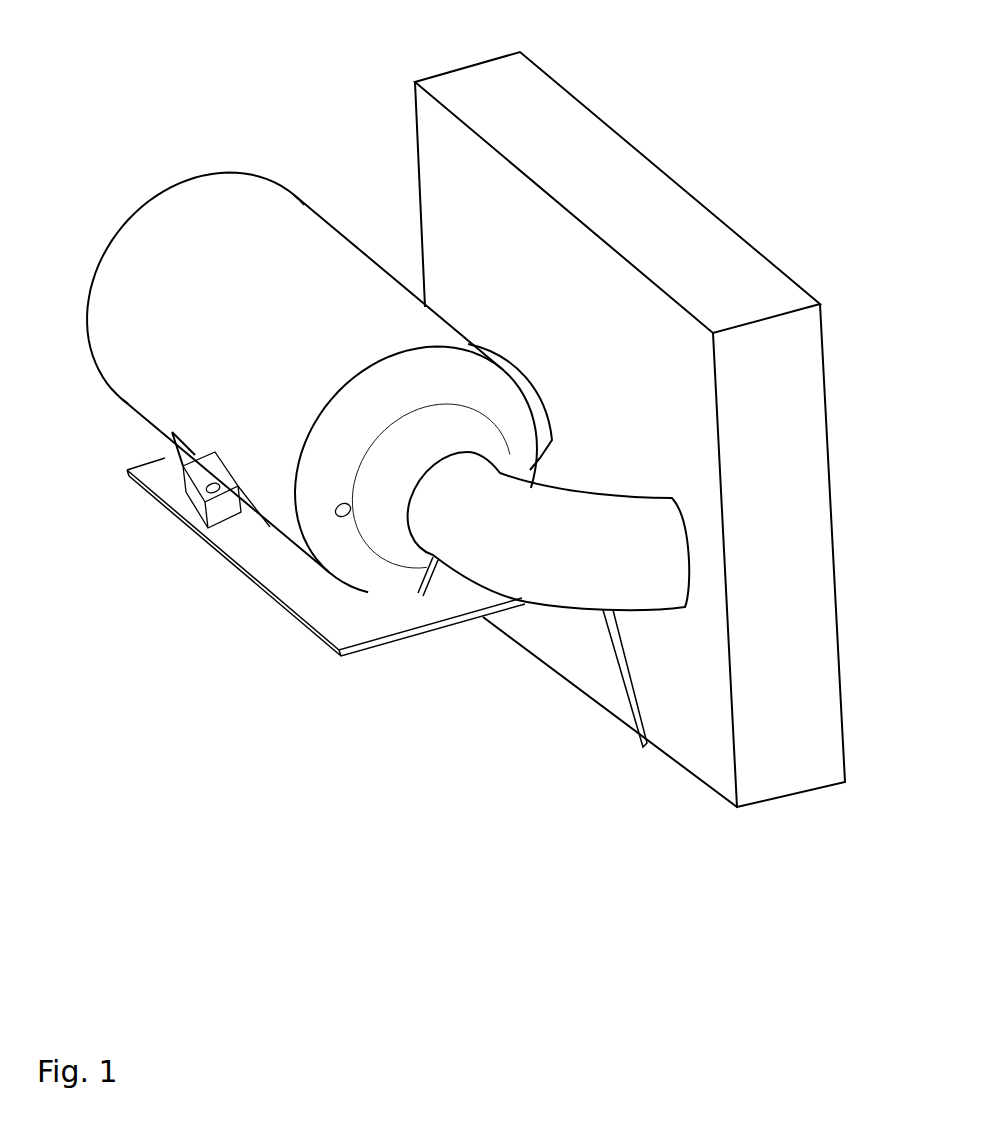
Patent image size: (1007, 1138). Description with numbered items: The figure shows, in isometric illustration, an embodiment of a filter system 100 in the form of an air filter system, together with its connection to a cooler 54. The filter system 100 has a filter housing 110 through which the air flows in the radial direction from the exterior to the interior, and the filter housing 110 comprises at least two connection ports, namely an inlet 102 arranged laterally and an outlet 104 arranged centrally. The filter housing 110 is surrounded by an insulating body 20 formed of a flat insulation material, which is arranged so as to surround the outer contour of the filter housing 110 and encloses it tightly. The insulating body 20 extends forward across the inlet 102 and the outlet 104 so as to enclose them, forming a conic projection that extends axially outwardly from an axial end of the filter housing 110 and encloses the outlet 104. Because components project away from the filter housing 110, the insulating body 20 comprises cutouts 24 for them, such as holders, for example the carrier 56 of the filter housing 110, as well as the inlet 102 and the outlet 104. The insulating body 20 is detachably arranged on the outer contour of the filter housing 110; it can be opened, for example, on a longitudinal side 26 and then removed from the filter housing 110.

The filter system 100 is at (203, 125).
The insulating body 20 is at (125, 237).
The cooler 54 is at (652, 163).
The filter housing 110 is at (420, 313).
The inlet 102 is at (537, 402).
The outlet 104 is at (478, 447).
The cutouts 24 is at (175, 447).
The longitudinal side 26 is at (292, 552).
The carrier 56 is at (430, 620).